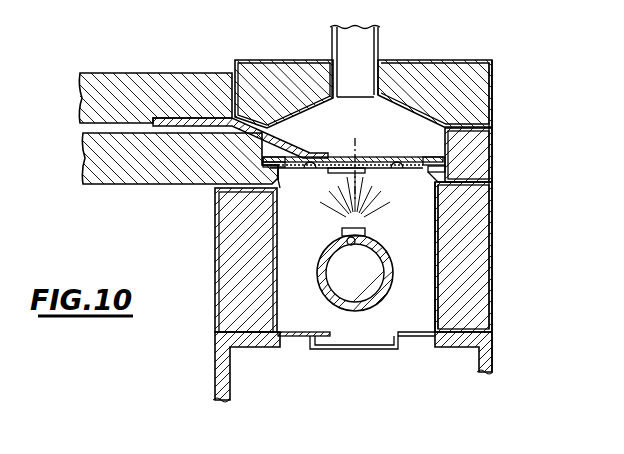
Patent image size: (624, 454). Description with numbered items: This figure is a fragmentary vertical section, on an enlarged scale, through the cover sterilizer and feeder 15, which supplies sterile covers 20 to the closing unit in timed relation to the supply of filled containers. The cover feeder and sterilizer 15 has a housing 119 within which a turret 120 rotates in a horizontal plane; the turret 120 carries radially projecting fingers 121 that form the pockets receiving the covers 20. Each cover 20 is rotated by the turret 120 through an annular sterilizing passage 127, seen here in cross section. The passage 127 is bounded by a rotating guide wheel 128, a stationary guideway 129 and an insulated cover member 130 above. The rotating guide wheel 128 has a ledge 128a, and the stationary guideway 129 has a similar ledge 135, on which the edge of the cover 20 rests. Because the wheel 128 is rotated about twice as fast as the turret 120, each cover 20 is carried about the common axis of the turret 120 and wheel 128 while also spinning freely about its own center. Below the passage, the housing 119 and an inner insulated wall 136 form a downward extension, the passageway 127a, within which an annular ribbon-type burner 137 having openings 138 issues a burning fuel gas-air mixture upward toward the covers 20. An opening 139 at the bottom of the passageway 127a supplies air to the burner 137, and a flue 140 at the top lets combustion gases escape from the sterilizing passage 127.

The cover sterilizer and feeder 15 is at (499, 77).
The cover 20 is at (390, 157).
The housing 119 is at (479, 277).
The turret 120 is at (163, 50).
The radially projecting finger 121 is at (305, 148).
The annular sterilizing passage 127 is at (397, 143).
The passageway 127a is at (330, 231).
The rotating guide wheel 128 is at (88, 160).
The ledge 128a is at (268, 168).
The stationary guideway 129 is at (430, 180).
The insulated cover member 130 is at (462, 47).
The ledge 135 is at (436, 168).
The inner insulated wall 136 is at (225, 290).
The annular ribbon-type burner 137 is at (329, 294).
The opening 138 is at (350, 248).
The opening 139 is at (374, 331).
The flue 140 is at (375, 42).